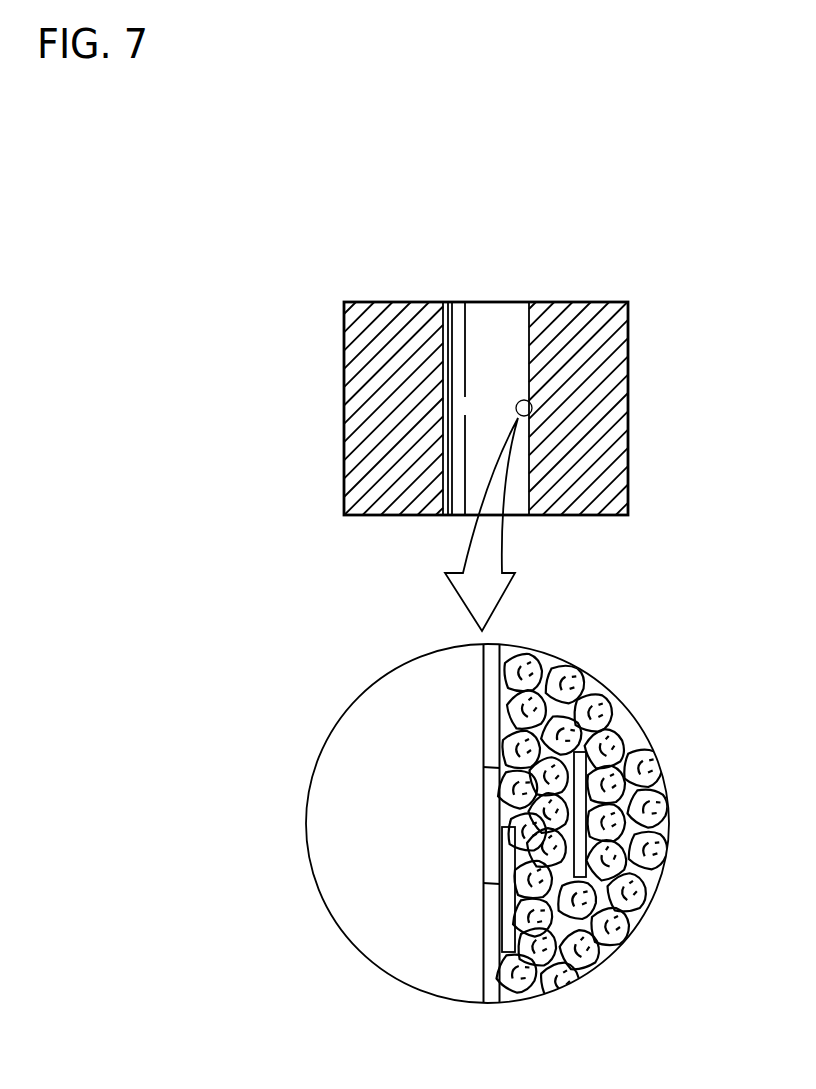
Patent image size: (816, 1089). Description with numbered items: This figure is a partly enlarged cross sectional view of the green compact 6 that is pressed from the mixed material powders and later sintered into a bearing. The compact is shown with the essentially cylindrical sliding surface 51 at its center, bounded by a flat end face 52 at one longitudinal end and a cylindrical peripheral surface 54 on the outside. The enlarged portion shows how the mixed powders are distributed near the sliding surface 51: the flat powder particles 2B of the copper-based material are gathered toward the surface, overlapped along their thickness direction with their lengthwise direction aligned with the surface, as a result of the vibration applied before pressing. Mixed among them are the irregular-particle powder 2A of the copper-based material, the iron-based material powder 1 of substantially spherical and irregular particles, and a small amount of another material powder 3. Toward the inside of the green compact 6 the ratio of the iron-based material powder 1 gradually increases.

The green compact 6 is at (493, 595).
The sliding surface 51 is at (507, 328).
The flat end face 52 is at (577, 300).
The peripheral surface 54 is at (629, 463).
The another material powder 3 is at (568, 673).
The iron-based material powder 1 is at (588, 888).
The irregular-particle powder 2A is at (590, 967).
The flat powder particles 2B is at (500, 913).